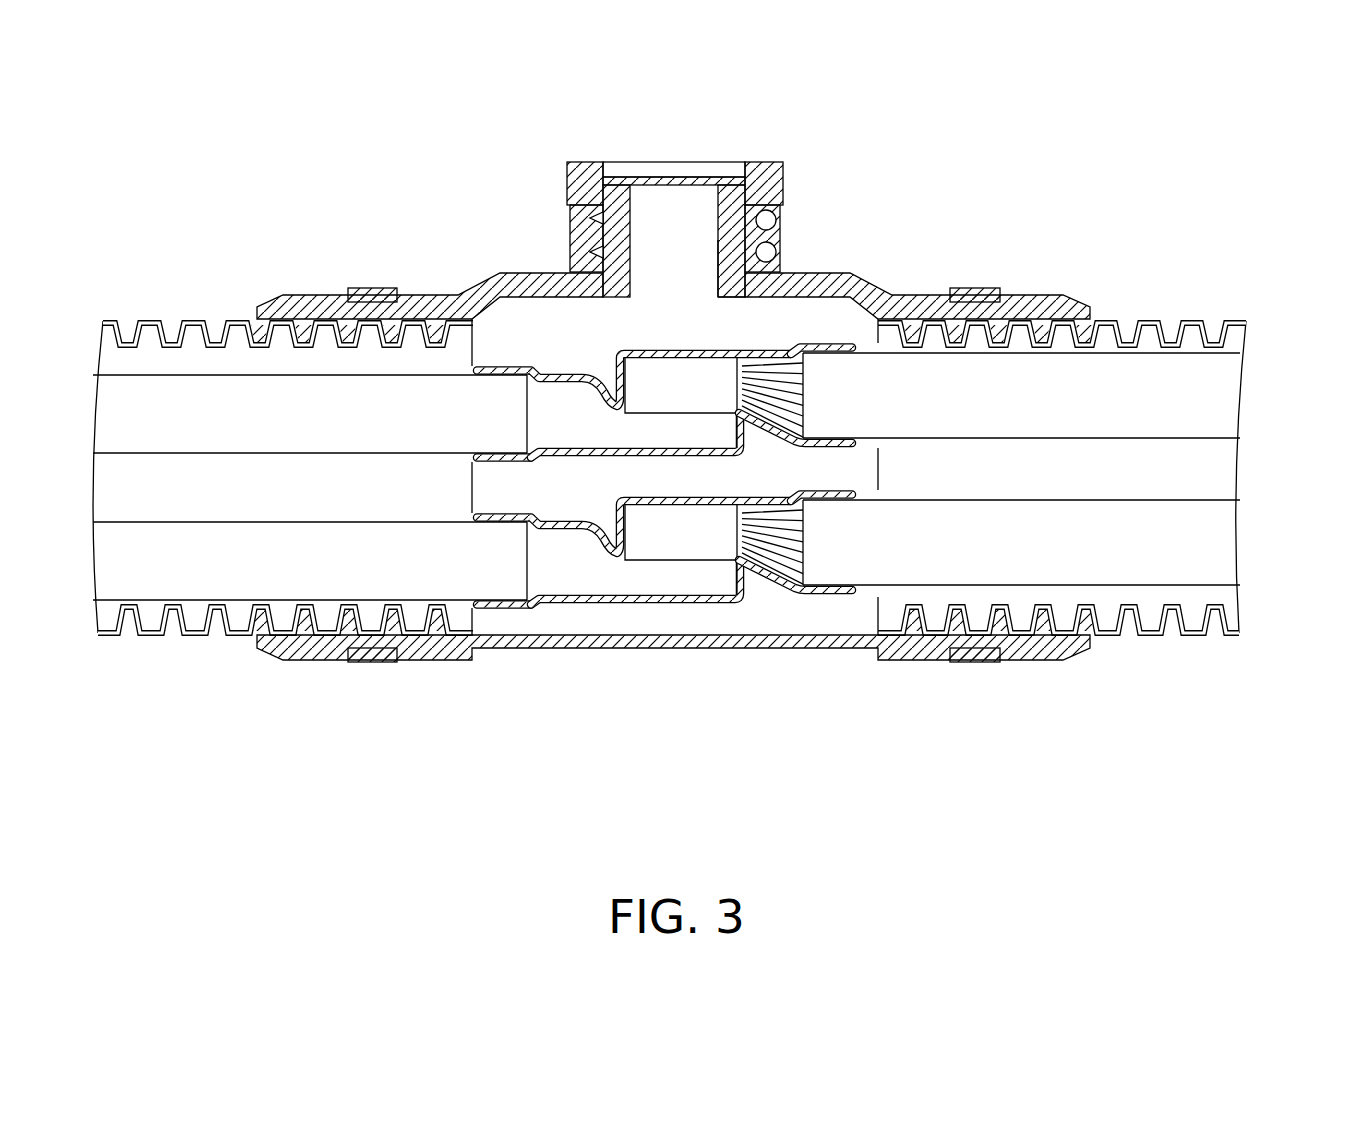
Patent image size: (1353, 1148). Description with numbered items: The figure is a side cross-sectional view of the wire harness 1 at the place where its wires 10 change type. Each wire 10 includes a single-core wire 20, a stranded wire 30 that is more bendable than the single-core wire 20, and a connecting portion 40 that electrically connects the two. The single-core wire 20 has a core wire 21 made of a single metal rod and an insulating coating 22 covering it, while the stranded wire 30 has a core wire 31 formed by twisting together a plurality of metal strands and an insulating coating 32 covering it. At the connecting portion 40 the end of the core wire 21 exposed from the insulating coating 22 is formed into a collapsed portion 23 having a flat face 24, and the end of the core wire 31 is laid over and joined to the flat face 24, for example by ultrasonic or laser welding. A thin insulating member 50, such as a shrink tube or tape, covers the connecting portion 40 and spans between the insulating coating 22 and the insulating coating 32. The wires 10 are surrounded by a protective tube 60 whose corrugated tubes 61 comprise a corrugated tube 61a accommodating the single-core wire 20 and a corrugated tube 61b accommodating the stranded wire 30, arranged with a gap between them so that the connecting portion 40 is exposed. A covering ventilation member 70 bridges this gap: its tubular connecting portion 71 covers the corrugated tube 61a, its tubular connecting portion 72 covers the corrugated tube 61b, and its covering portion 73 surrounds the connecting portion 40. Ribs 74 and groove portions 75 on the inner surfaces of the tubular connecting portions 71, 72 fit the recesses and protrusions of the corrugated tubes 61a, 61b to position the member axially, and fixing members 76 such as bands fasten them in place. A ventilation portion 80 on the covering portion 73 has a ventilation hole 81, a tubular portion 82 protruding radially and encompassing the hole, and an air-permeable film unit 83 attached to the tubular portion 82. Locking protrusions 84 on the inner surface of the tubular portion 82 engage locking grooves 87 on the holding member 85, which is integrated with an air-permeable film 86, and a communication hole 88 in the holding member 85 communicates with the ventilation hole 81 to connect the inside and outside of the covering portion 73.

The wire harness 1 is at (1206, 165).
The wire 10 is at (1240, 345).
The single-core wire 20 is at (608, 546).
The core wire 21 is at (563, 583).
The insulating coating 22 is at (502, 590).
The collapsed portion 23 is at (648, 583).
The flat face 24 is at (690, 553).
The stranded wire 30 is at (795, 541).
The core wire 31 is at (780, 557).
The insulating coating 32 is at (837, 578).
The connecting portion 40 is at (655, 350).
The insulating member 50 is at (502, 366).
The protective tube 60 is at (1190, 238).
The corrugated tube 61 is at (669, 434).
The corrugated tube 61a is at (197, 319).
The corrugated tube 61b is at (1108, 319).
The covering ventilation member 70 is at (672, 440).
The tubular connecting portion 71 is at (332, 296).
The tubular connecting portion 72 is at (910, 297).
The covering portion 73 is at (533, 283).
The rib 74 is at (303, 345).
The groove portion 75 is at (375, 347).
The fixing member 76 is at (369, 290).
The ventilation portion 80 is at (670, 205).
The ventilation hole 81 is at (750, 297).
The tubular portion 82 is at (573, 213).
The air-permeable film unit 83 is at (673, 103).
The locking protrusion 84 is at (722, 233).
The holding member 85 is at (587, 162).
The air-permeable film 86 is at (648, 162).
The locking groove 87 is at (778, 233).
The communication hole 88 is at (713, 265).